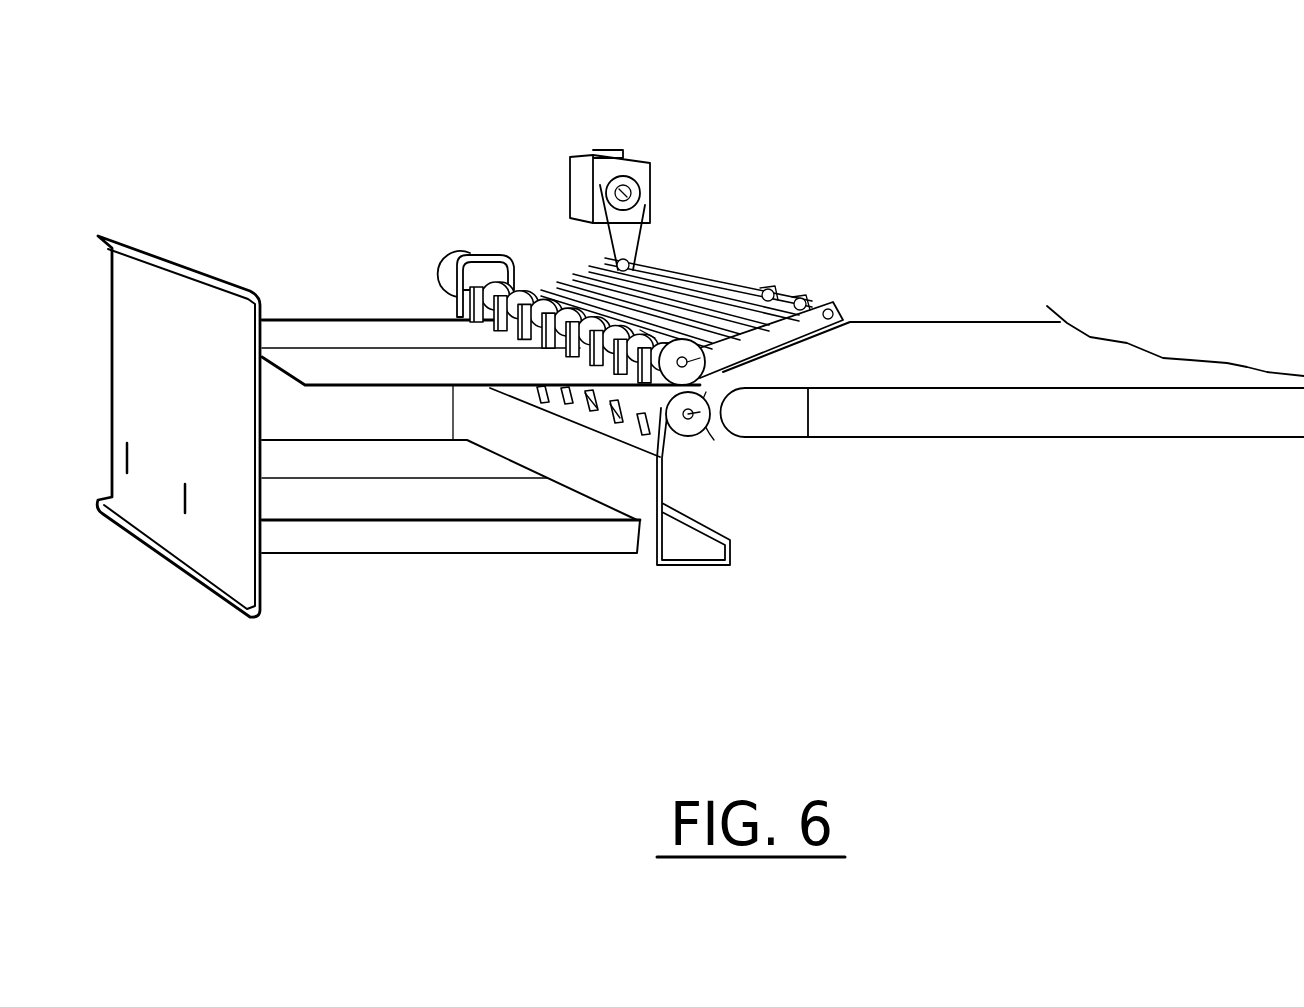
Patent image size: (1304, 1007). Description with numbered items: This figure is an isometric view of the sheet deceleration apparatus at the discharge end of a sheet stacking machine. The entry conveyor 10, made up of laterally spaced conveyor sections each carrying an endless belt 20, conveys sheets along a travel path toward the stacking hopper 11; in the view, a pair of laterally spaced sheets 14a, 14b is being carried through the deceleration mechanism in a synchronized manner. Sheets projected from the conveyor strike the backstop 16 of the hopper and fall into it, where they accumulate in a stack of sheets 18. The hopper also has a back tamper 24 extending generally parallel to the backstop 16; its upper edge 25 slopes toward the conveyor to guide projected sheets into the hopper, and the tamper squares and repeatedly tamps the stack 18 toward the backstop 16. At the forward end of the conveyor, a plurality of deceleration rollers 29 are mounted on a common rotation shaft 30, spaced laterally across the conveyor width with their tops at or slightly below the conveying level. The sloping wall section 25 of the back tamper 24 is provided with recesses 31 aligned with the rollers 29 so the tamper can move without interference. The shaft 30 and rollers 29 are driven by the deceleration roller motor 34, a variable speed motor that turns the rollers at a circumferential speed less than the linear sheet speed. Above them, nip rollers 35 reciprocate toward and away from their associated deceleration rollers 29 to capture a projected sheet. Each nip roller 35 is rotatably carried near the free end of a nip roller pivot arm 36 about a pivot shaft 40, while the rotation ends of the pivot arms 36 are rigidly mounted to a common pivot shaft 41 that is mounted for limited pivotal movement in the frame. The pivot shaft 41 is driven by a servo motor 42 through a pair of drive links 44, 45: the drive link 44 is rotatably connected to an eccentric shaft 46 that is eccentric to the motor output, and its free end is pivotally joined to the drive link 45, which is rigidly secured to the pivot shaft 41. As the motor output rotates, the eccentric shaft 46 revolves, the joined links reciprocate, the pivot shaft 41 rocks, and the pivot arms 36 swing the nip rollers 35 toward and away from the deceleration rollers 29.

The entry conveyor 10 is at (1000, 321).
The stacking hopper 11 is at (308, 456).
The sheet 14a is at (423, 362).
The sheet 14b is at (358, 331).
The backstop 16 is at (173, 412).
The stack of sheets 18 is at (403, 556).
The endless belt 20 is at (1123, 440).
The back tamper 24 is at (647, 500).
The upper edge (sloping wall section) 25 is at (660, 420).
The deceleration roller 29 is at (693, 440).
The rotation shaft 30 is at (720, 432).
The recess 31 is at (658, 392).
The deceleration roller motor 34 is at (438, 258).
The nip roller 35 is at (707, 338).
The nip roller pivot arm 36 is at (843, 320).
The pivot axis or shaft 40 is at (770, 289).
The pivot shaft 41 is at (805, 297).
The servo motor 42 is at (580, 183).
The drive link 44 is at (640, 232).
The drive link 45 is at (648, 336).
The eccentric shaft 46 is at (606, 195).